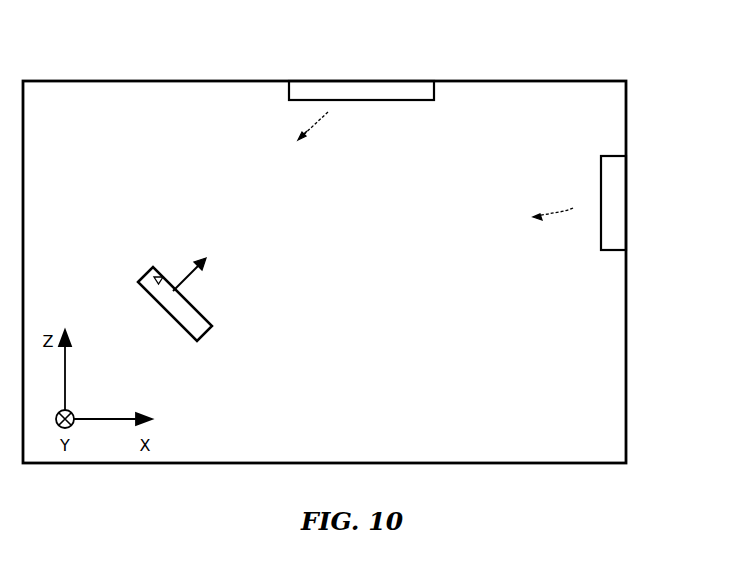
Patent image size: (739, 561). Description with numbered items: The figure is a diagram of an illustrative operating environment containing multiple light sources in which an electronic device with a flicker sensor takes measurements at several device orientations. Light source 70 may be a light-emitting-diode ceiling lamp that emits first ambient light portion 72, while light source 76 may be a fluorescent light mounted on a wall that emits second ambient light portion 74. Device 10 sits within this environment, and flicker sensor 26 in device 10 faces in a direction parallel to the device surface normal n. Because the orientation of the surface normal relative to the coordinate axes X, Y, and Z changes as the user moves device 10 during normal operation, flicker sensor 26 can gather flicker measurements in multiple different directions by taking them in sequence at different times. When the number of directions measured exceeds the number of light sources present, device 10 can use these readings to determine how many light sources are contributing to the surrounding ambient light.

The electronic device 10 is at (192, 337).
The flicker sensor 26 is at (159, 278).
The light source 70 is at (410, 91).
The first ambient light portion 72 is at (311, 124).
The second ambient light portion 74 is at (557, 218).
The light source 76 is at (618, 231).